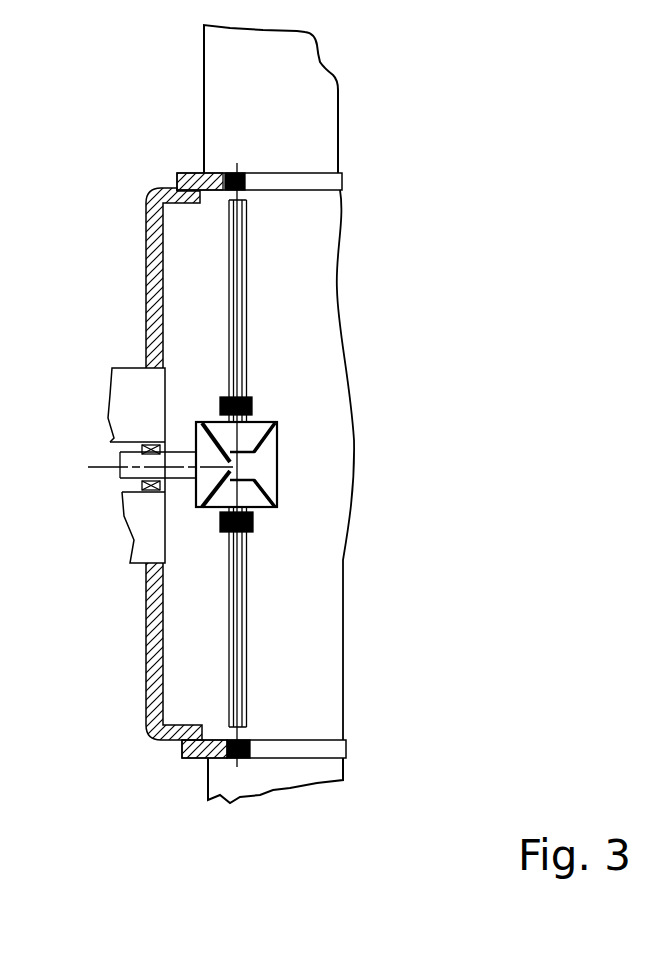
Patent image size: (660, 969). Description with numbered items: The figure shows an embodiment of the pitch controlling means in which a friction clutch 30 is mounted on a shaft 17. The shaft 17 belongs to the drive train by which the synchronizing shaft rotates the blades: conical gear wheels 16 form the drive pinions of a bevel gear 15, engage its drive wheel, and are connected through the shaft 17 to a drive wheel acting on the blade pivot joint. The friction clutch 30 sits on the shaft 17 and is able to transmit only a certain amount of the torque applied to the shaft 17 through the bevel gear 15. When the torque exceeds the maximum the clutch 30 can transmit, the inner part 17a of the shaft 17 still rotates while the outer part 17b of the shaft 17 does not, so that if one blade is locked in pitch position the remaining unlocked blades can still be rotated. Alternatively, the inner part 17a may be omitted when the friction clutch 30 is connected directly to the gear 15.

The shaft 17 is at (265, 348).
The inner part of the shaft 17a is at (249, 417).
The outer part of the shaft 17b is at (244, 302).
The friction clutch 30 is at (250, 405).
The bevel gear 15 is at (283, 463).
The conical gear wheels 16 is at (247, 495).